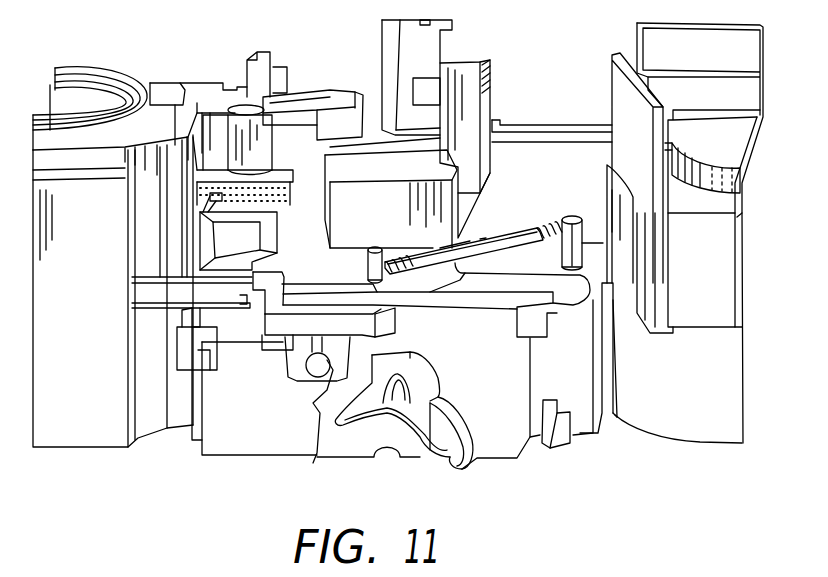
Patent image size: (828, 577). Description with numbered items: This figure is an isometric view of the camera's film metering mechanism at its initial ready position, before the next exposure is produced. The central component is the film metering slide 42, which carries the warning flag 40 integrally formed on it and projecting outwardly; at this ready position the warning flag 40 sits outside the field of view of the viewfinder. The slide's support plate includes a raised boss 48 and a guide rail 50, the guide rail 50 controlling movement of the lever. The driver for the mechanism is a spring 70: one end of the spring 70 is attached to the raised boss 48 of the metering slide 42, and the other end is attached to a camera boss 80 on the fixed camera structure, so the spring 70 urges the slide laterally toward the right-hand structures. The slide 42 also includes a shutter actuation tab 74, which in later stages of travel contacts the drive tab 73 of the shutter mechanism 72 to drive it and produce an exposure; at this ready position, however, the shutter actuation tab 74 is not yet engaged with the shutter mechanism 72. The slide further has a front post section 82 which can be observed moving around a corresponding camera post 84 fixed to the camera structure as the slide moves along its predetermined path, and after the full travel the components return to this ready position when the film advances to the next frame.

The warning flag 40 is at (462, 80).
The film metering slide 42 is at (512, 92).
The raised boss 48 is at (388, 207).
The guide rail 50 is at (147, 287).
The spring 70 is at (495, 238).
The shutter mechanism 72 is at (293, 383).
The drive tab 73 is at (426, 423).
The shutter actuation tab 74 is at (267, 287).
The camera boss 80 is at (570, 217).
The front post section 82 is at (210, 194).
The camera post 84 is at (290, 203).